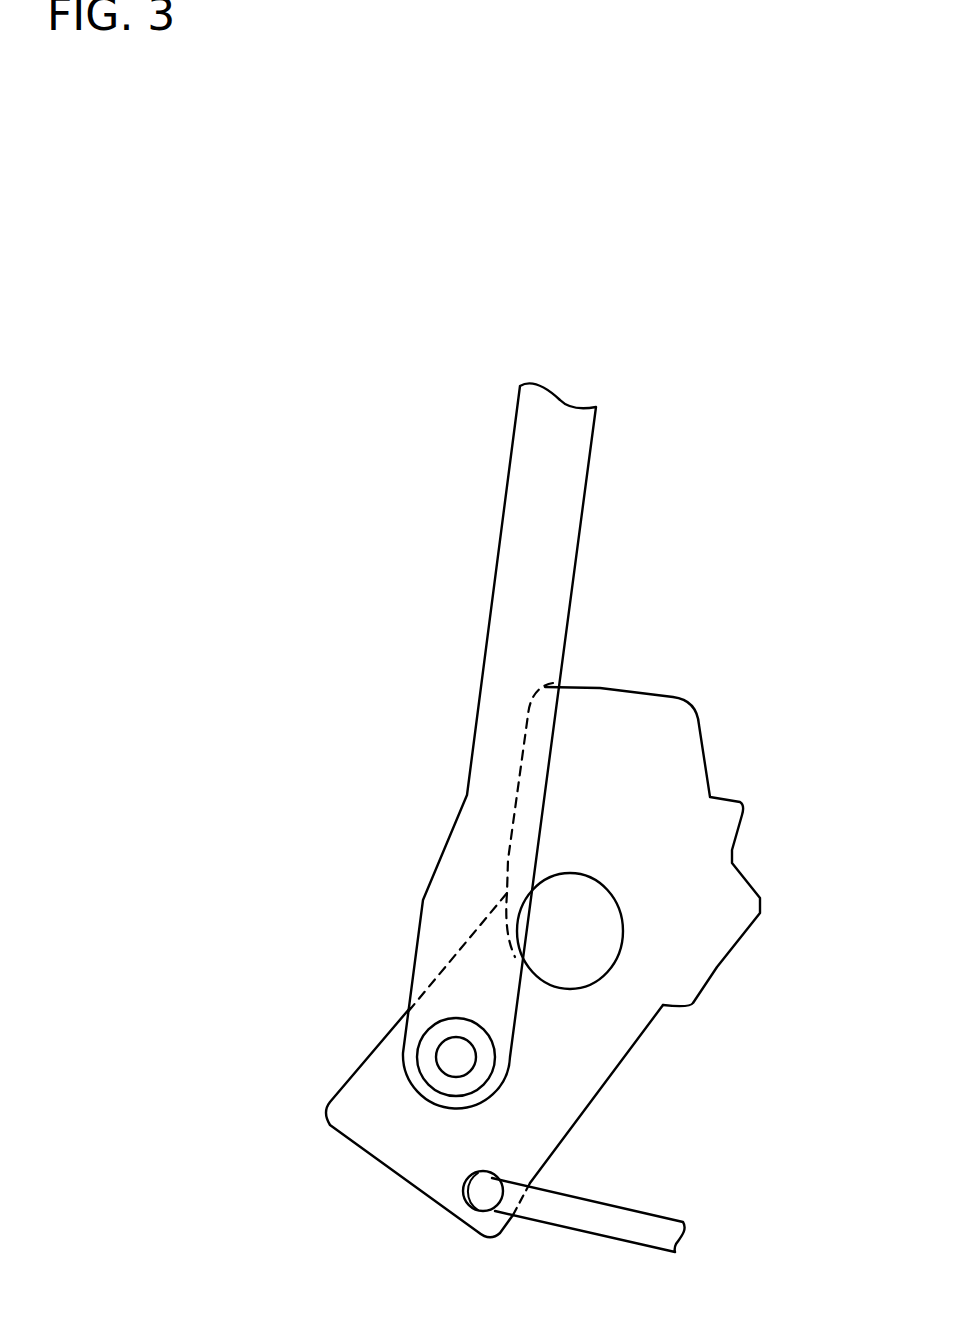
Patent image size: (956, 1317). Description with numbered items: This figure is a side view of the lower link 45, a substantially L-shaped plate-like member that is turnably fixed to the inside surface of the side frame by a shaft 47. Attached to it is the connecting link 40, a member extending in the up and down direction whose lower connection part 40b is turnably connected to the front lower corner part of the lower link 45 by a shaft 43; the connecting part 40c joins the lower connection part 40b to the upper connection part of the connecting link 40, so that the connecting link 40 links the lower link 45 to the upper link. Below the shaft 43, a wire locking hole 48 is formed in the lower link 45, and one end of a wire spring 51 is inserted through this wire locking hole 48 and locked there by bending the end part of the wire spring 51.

The connecting link 40 is at (534, 811).
The connecting part 40c is at (503, 552).
The lower connection part 40b is at (423, 938).
The lower link 45 is at (697, 970).
The shaft 47 is at (583, 970).
The shaft 43 is at (463, 1063).
The wire locking hole 48 is at (463, 1187).
The wire spring 51 is at (597, 1207).